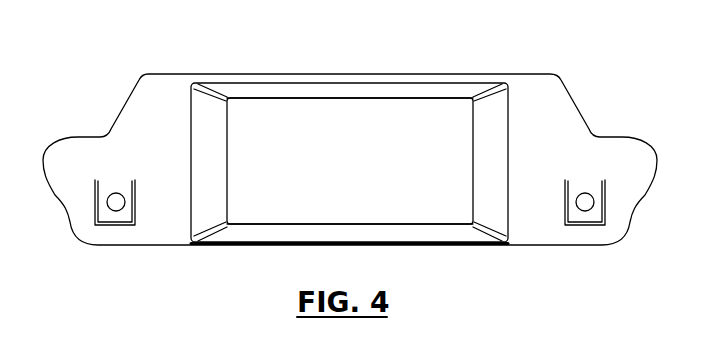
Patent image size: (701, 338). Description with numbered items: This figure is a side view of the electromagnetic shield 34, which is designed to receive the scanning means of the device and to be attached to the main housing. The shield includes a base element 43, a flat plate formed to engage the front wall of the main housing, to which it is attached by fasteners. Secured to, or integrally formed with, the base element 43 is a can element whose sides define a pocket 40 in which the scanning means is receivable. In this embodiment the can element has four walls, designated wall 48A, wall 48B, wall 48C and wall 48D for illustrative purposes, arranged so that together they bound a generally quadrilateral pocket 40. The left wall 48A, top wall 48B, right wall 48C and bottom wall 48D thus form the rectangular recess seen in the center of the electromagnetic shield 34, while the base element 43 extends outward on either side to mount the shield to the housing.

The electromagnetic shield 34 is at (556, 53).
The pocket 40 is at (408, 182).
The base element 43 is at (162, 235).
The wall 48A is at (218, 185).
The wall 48B is at (300, 92).
The wall 48C is at (502, 138).
The wall 48D is at (435, 235).